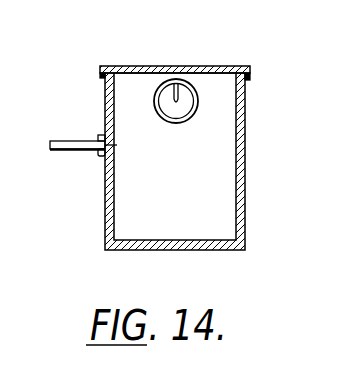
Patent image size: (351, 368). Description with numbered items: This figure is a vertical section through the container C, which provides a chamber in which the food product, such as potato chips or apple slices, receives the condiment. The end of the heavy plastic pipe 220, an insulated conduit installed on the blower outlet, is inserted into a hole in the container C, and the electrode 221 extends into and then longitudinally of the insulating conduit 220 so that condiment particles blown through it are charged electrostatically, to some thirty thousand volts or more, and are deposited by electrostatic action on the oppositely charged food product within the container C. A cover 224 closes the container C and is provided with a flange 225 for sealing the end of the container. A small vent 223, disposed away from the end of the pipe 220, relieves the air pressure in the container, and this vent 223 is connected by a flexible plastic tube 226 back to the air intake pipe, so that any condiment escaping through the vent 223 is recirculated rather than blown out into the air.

The container C is at (246, 190).
The heavy plastic pipe 220 is at (160, 123).
The electrode 221 is at (180, 99).
The vent 223 is at (97, 162).
The cover 224 is at (216, 66).
The flange 225 is at (250, 72).
The tube 226 is at (63, 141).